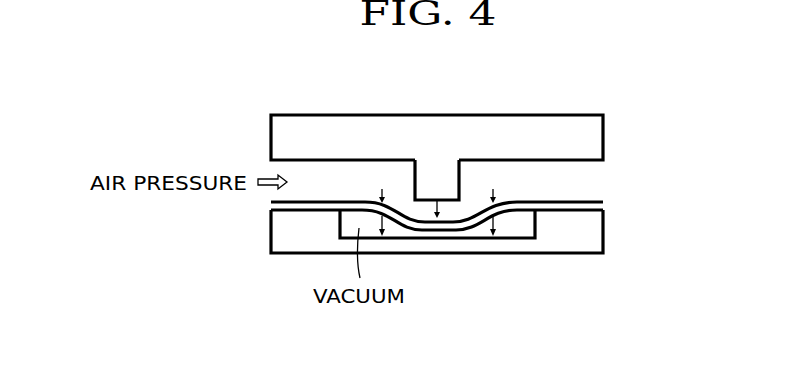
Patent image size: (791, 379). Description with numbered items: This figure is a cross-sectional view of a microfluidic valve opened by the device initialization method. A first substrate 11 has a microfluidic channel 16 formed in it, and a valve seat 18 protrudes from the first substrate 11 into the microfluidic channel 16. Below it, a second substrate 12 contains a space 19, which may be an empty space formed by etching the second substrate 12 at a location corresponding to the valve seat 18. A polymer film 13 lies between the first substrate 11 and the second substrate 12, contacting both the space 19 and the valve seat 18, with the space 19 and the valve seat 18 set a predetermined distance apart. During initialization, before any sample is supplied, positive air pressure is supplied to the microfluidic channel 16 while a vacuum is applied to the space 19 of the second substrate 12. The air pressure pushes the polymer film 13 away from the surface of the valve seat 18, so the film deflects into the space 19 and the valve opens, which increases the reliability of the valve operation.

The first substrate 11 is at (603, 139).
The valve seat 18 is at (414, 175).
The microfluidic channel 16 is at (592, 183).
The polymer film 13 is at (603, 205).
The second substrate 12 is at (603, 238).
The space 19 is at (515, 229).